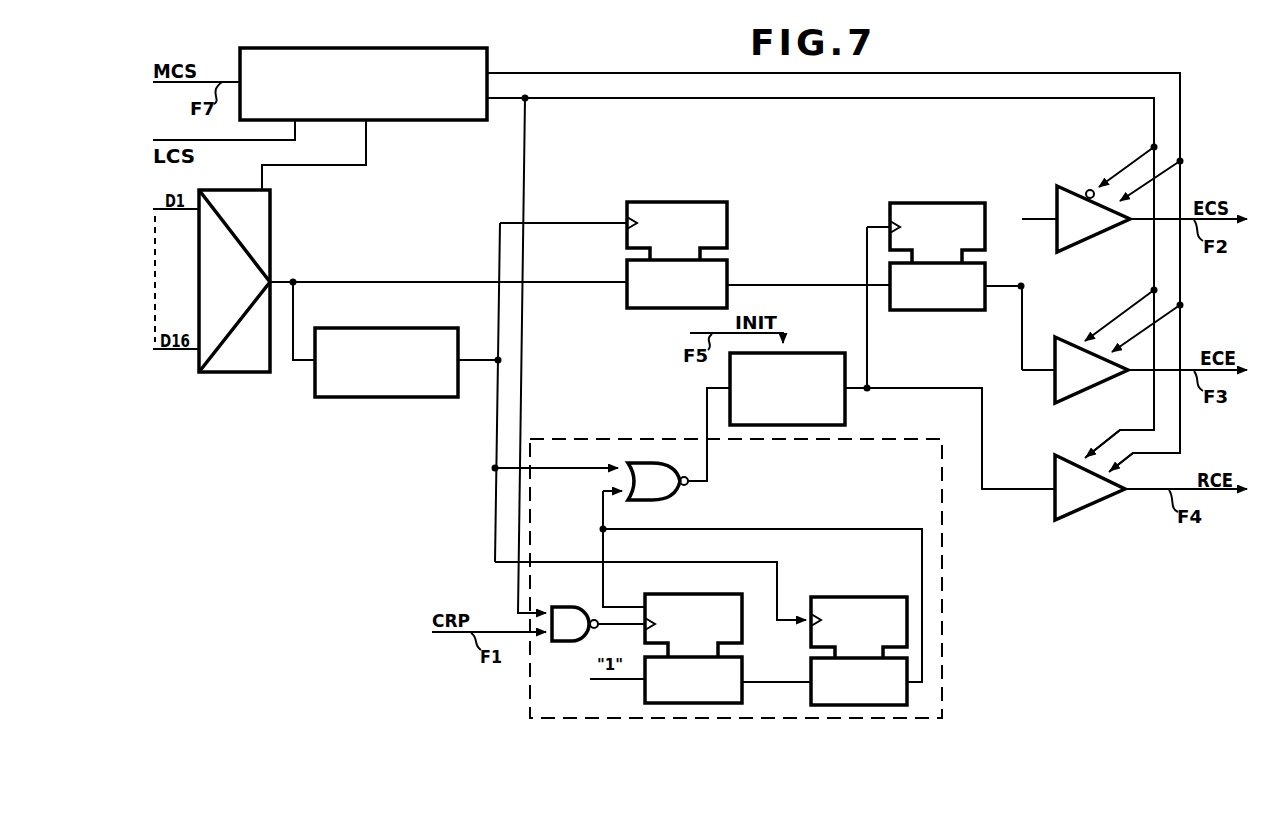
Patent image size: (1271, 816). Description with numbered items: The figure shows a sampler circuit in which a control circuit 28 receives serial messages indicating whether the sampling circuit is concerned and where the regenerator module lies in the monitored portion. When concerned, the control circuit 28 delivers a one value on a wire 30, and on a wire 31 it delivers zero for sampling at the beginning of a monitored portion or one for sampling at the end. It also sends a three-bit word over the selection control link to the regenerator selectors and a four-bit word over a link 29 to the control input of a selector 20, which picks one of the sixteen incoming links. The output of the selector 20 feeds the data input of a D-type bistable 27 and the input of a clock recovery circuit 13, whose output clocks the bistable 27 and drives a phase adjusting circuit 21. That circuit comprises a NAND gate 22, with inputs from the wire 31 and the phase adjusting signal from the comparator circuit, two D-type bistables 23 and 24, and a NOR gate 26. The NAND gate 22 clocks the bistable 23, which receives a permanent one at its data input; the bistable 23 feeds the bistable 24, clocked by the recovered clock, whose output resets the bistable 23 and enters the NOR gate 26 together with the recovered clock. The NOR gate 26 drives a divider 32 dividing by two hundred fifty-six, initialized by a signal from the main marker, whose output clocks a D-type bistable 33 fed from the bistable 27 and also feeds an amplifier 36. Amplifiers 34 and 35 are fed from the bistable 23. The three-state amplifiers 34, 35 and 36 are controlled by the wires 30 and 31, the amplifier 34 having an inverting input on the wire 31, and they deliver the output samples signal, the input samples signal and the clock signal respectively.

The clock recovery circuit 13 is at (420, 342).
The selector 20 is at (256, 229).
The phase adjusting circuit 21 is at (582, 446).
The NAND gate 22 is at (570, 608).
The D-type bistable 23 is at (736, 647).
The D-type bistable 24 is at (848, 601).
The NOR gate 26 is at (654, 492).
The D-type bistable 27 is at (708, 228).
The control circuit 28 is at (420, 106).
The link 29 is at (318, 166).
The wire 30 is at (563, 73).
The wire 31 is at (500, 99).
The divider 32 is at (826, 406).
The D-type bistable 33 is at (960, 211).
The amplifier 34 is at (1082, 229).
The amplifier 35 is at (1085, 380).
The amplifier 36 is at (1088, 496).